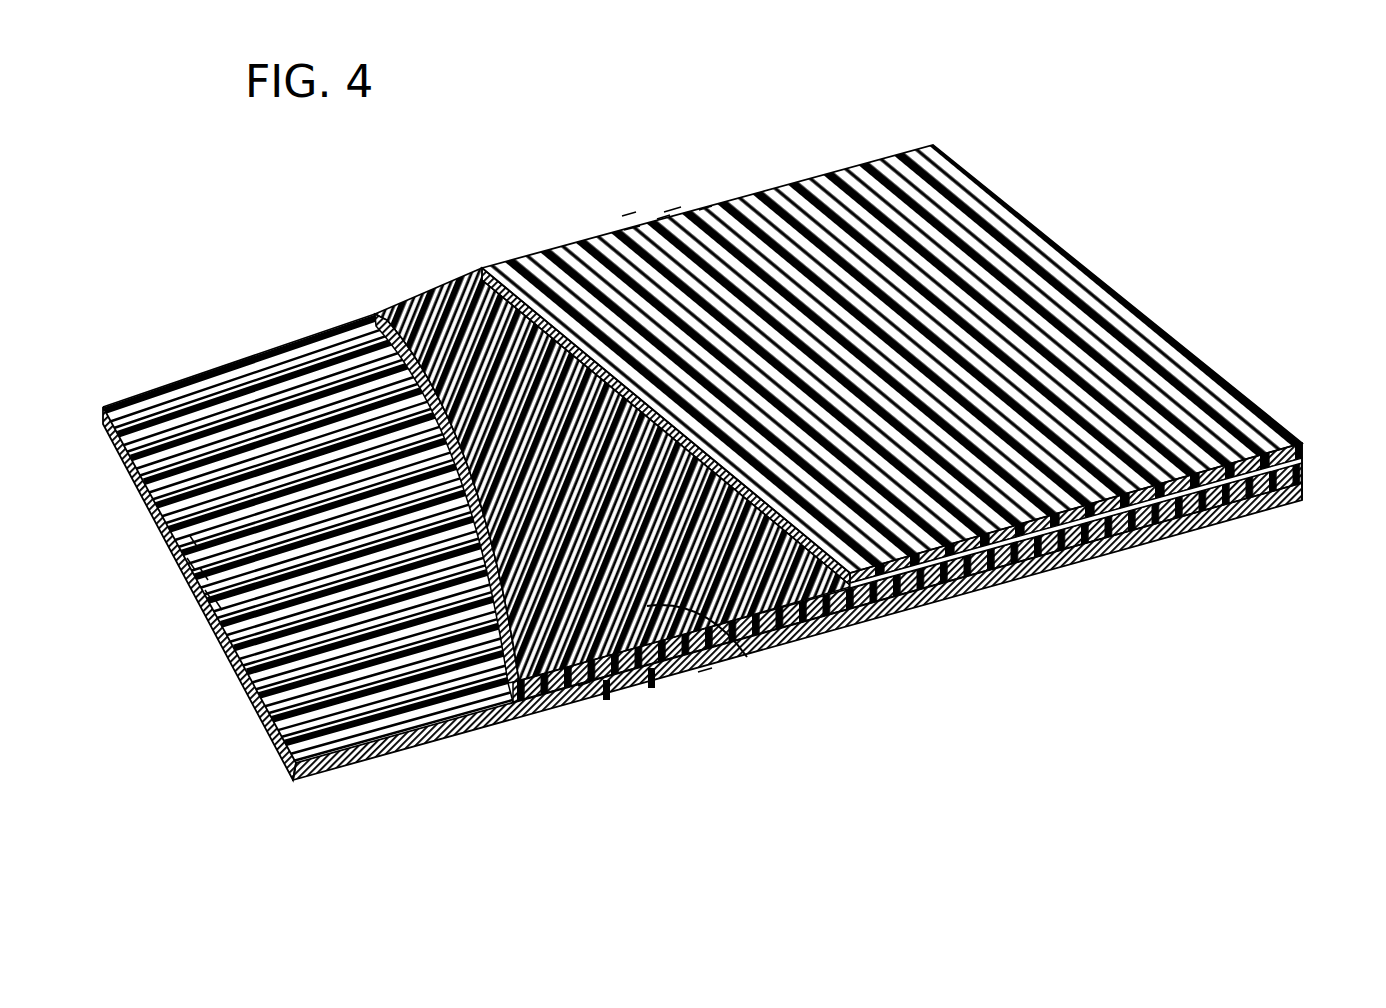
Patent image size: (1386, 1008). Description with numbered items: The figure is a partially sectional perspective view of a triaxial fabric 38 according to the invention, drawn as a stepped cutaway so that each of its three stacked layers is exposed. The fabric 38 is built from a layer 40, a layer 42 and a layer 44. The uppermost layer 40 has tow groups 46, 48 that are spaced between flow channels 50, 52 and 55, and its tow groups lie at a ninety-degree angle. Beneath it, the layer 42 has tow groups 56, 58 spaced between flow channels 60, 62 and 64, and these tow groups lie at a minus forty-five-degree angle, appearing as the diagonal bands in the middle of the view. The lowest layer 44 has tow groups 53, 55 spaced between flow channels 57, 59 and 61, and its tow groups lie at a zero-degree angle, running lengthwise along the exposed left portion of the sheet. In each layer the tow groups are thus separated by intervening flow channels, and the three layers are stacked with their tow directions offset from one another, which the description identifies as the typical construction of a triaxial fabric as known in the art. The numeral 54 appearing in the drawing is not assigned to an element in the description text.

The triaxial fabric 38 is at (797, 150).
The layer 40 is at (1267, 425).
The layer 42 is at (1310, 470).
The layer 44 is at (1162, 537).
The tow group 46 is at (628, 214).
The tow group 48 is at (673, 210).
The flow channel 50 is at (706, 207).
The flow channel 52 is at (663, 216).
The fiber 54 is at (628, 228).
The tow group 56 is at (620, 700).
The tow group 58 is at (664, 690).
The flow channel 60 is at (583, 683).
The flow channel 62 is at (735, 655).
The flow channel 64 is at (705, 670).
The tow group 53 is at (203, 570).
The tow group 55 is at (190, 593).
The flow channel 57 is at (193, 538).
The flow channel 59 is at (190, 560).
The flow channel 61 is at (217, 600).